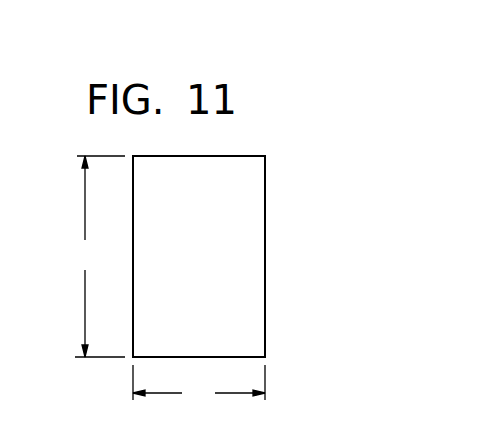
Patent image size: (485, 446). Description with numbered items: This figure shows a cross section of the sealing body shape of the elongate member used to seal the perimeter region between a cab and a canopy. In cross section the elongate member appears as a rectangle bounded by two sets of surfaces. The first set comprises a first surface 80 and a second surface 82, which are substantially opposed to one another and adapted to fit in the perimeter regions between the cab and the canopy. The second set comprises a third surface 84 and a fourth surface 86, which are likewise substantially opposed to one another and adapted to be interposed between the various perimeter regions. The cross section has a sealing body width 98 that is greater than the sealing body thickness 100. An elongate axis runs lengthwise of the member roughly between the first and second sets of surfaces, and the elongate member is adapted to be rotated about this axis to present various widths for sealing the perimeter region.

The first surface 80 is at (220, 156).
The fourth surface 86 is at (265, 212).
The second surface 82 is at (235, 358).
The third surface 84 is at (133, 334).
The sealing body thickness 100 is at (97, 256).
The sealing body width 98 is at (199, 384).